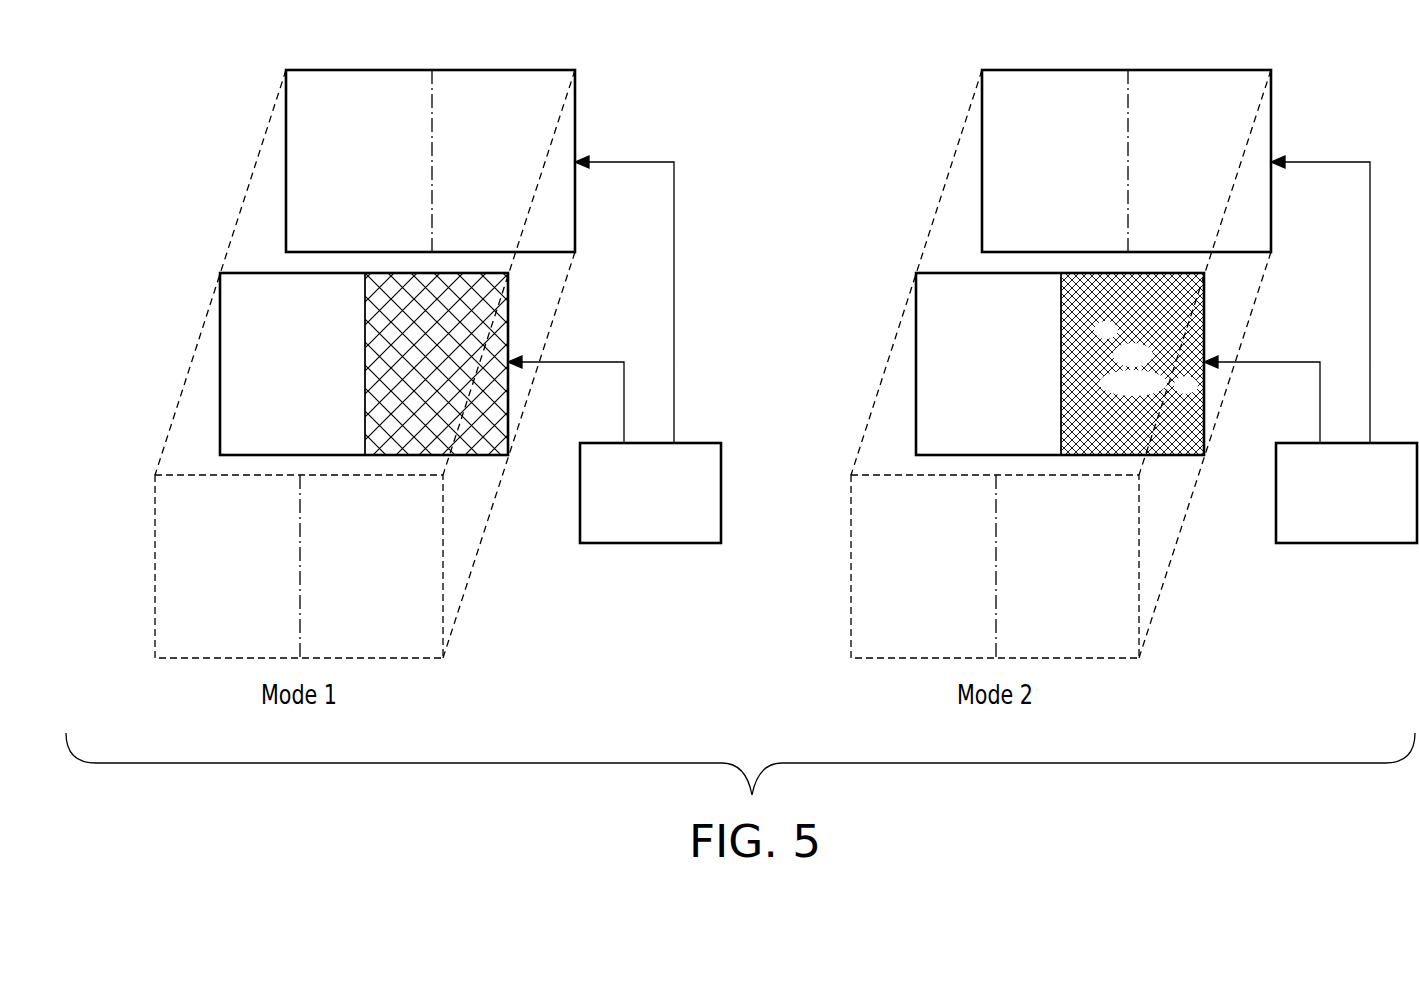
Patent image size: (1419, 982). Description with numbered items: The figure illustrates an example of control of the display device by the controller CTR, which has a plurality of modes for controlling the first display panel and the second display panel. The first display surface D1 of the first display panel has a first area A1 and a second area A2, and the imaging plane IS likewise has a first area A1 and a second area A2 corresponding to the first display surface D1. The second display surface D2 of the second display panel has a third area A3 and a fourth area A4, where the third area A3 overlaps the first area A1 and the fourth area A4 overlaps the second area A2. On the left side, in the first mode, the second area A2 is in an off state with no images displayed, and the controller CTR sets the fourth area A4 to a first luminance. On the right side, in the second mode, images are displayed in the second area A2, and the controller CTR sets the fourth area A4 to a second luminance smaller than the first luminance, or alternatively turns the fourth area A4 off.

The first display surface D1 is at (286, 133).
The second display surface D2 is at (220, 333).
The imaging plane IS is at (155, 537).
The first area A1 is at (640, 366).
The second area A2 is at (791, 361).
The third area A3 is at (640, 367).
The fourth area A4 is at (784, 364).
The controller CTR is at (653, 545).